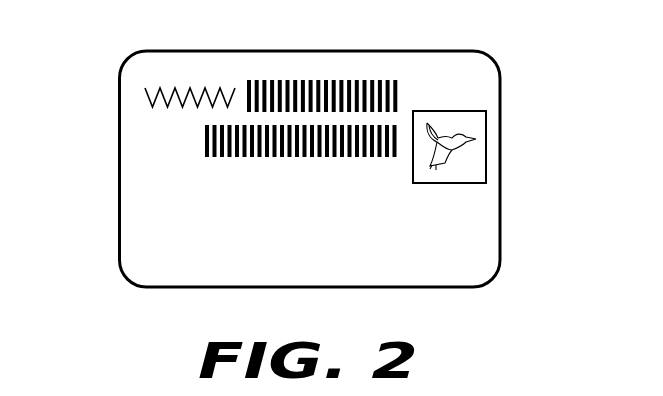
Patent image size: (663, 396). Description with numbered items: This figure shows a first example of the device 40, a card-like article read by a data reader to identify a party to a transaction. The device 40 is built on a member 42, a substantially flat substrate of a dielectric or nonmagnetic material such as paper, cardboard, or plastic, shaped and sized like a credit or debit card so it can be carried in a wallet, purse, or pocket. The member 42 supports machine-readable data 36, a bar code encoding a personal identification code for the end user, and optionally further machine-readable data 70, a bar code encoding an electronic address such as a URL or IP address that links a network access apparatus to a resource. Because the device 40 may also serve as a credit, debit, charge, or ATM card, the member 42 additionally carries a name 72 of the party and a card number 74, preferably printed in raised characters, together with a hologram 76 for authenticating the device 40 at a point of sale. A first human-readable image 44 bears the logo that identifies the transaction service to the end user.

The device 40 is at (276, 197).
The member 42 is at (120, 71).
The machine-readable data 70 is at (402, 86).
The machine-readable data 36 is at (400, 134).
The hologram 76 is at (462, 167).
The card number 74 is at (460, 217).
The name 72 is at (147, 268).
The first human-readable image 44 is at (458, 273).